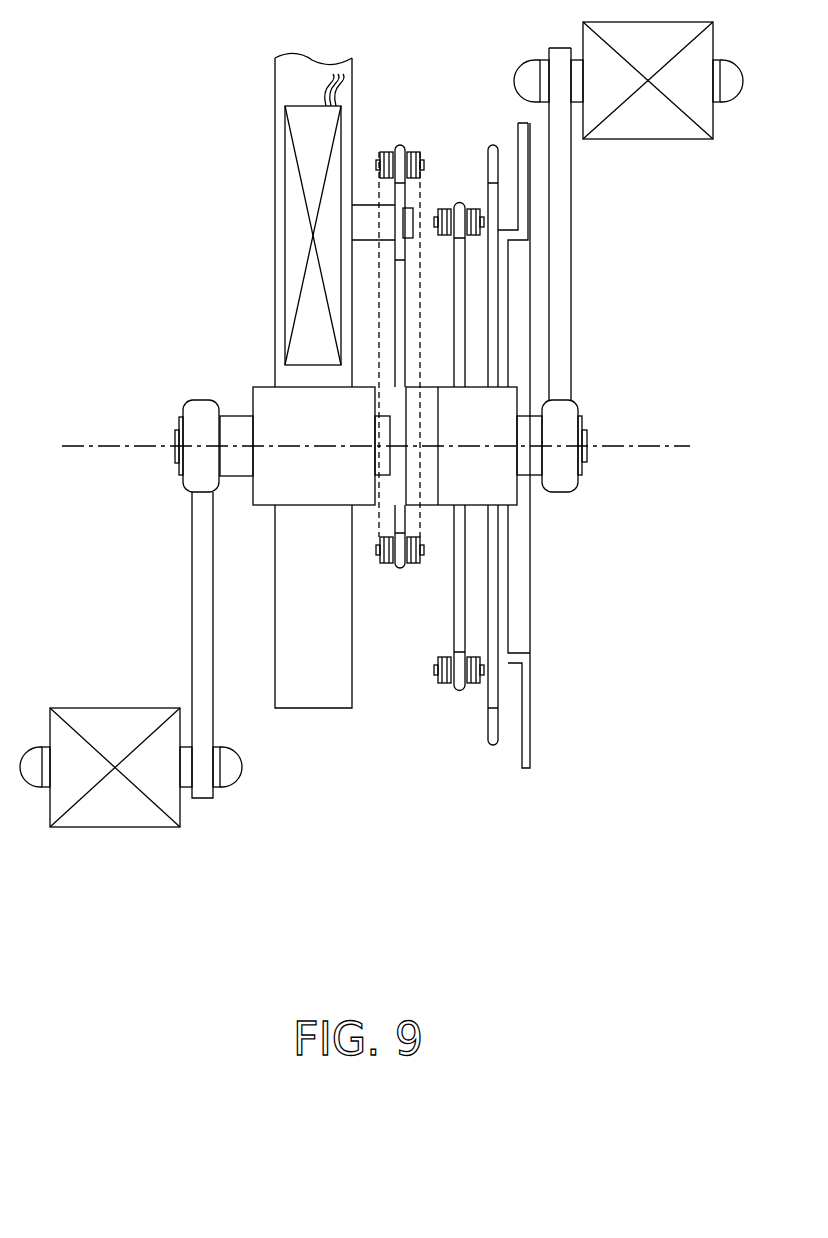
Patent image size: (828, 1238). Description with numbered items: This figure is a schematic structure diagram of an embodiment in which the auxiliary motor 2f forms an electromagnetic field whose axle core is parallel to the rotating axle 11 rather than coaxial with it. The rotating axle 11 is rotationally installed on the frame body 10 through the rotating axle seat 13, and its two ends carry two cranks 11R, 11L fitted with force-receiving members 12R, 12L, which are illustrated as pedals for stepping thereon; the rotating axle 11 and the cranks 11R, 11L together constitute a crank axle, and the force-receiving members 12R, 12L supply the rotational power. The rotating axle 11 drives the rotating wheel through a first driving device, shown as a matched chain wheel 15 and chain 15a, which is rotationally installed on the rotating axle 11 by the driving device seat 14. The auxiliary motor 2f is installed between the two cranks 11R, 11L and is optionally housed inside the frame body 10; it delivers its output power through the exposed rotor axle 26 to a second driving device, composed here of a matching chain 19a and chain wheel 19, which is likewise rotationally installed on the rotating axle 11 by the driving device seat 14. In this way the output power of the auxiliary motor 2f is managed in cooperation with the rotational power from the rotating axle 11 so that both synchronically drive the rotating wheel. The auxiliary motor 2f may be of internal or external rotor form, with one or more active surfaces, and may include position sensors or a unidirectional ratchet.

The frame body 10 is at (284, 90).
The auxiliary motor 2f is at (278, 117).
The rotor axle 26 is at (363, 212).
The rotating axle seat 13 is at (263, 393).
The rotating axle 11 is at (238, 420).
The driving device seat 14 is at (498, 492).
The chain wheel 19 is at (397, 522).
The chain 19a is at (415, 565).
The chain wheel 15 is at (460, 640).
The chain 15a is at (473, 688).
The crank 11R is at (562, 254).
The force-receiving member 12R is at (654, 125).
The crank 11L is at (192, 611).
The force-receiving member 12L is at (113, 725).